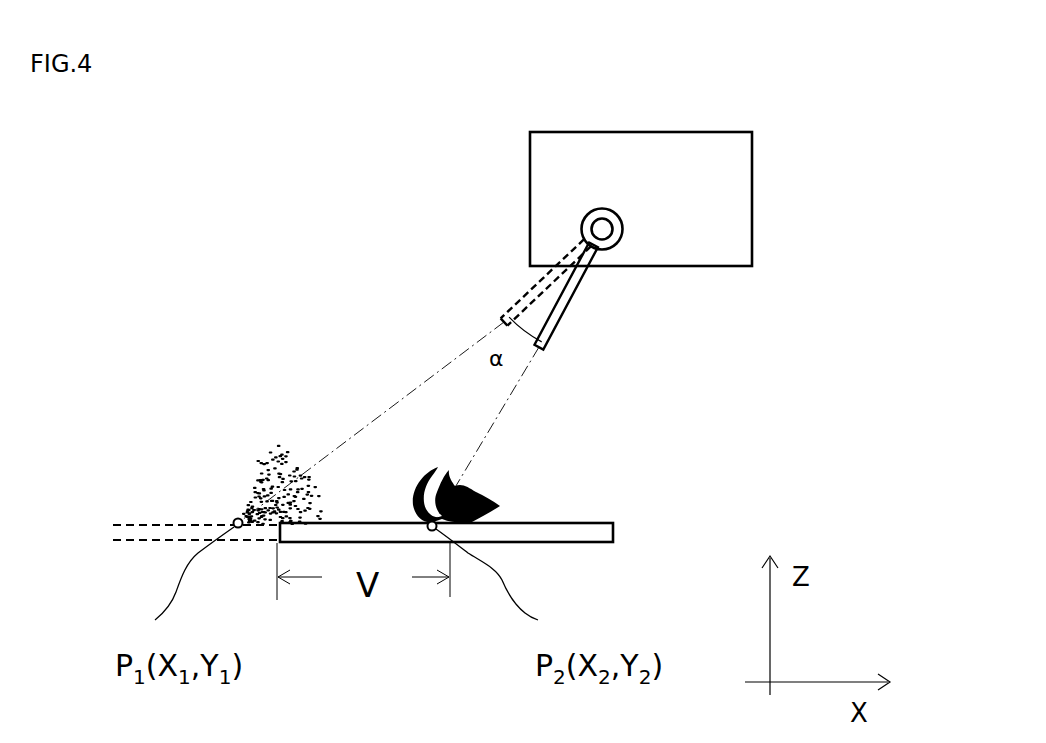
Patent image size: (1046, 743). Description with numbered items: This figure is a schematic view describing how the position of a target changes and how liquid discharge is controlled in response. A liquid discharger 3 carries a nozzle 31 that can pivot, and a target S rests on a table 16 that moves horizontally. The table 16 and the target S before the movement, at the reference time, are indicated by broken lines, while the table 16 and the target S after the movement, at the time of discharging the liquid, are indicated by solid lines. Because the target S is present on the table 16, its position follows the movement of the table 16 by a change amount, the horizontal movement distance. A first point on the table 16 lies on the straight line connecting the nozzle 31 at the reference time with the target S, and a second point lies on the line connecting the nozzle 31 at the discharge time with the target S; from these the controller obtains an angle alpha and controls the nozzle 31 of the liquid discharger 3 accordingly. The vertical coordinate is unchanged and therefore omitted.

The liquid discharger 3 is at (753, 208).
The nozzle 31 is at (573, 298).
The table 16 is at (588, 543).
The target S is at (497, 500).